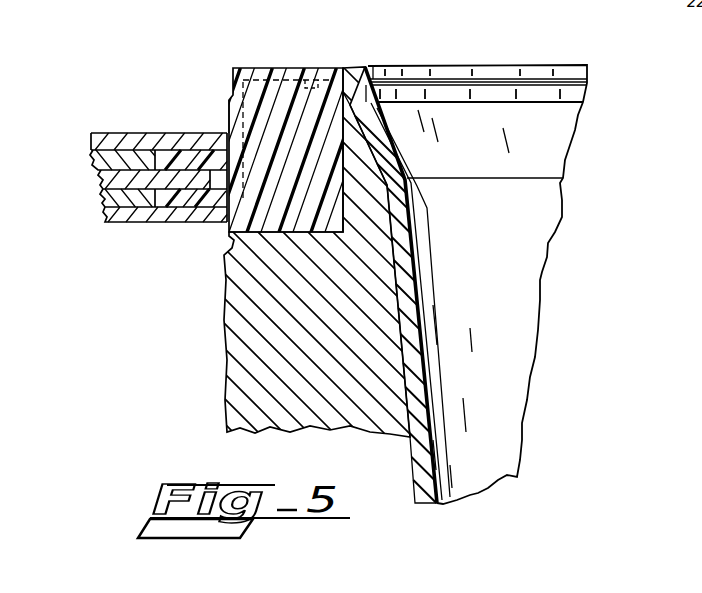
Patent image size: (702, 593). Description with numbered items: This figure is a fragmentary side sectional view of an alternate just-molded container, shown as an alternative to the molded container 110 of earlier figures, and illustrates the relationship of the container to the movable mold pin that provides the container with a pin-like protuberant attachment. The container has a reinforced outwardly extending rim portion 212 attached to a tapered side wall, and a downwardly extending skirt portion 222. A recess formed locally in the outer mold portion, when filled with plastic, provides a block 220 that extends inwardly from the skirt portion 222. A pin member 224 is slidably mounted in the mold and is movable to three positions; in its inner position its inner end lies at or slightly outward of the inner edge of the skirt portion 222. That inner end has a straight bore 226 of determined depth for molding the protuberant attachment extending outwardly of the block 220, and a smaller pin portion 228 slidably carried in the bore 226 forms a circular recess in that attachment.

The molded container 110 is at (596, 245).
The reinforced outwardly extending rim portion 212 is at (302, 82).
The block 220 is at (281, 82).
The downwardly extending skirt portion 222 is at (228, 120).
The pin member 224 is at (91, 135).
The straight bore 226 is at (168, 212).
The smaller pin portion 228 is at (193, 187).